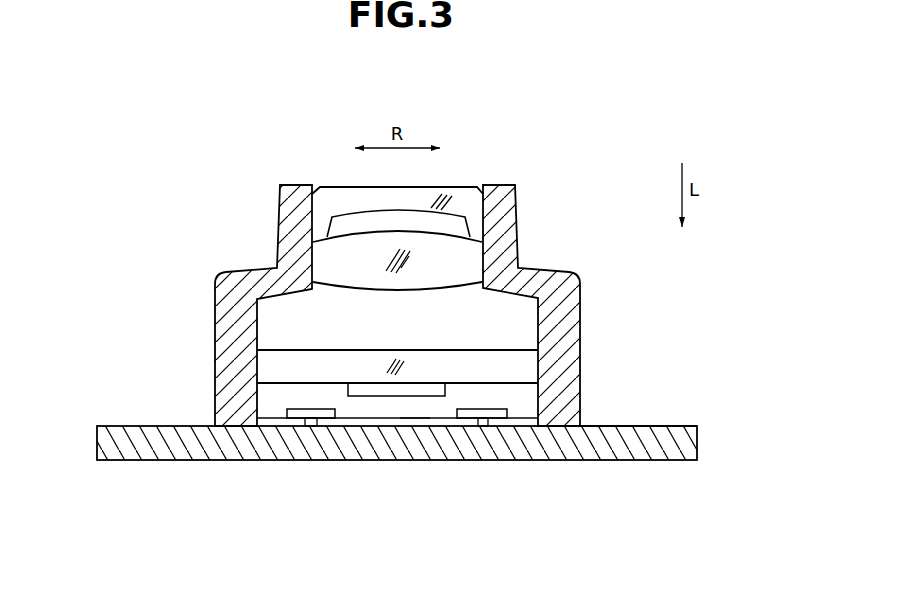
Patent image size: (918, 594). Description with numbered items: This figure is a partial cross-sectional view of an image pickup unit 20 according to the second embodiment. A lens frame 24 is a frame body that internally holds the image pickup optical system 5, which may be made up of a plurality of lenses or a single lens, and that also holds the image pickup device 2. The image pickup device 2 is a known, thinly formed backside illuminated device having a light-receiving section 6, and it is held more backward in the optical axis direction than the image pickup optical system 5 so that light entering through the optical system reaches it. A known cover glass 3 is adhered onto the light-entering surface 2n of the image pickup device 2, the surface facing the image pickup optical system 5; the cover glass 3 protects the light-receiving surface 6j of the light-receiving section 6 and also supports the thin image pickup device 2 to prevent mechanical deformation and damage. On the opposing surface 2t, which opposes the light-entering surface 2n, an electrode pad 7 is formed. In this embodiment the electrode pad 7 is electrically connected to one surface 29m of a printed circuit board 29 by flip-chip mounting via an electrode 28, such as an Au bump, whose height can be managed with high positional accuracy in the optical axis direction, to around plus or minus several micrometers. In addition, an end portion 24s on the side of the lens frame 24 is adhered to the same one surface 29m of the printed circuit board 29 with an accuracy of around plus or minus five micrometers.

The image pickup unit 20 is at (600, 156).
The lens frame 24 is at (500, 205).
The end portion 24s is at (236, 428).
The image pickup optical system 5 is at (457, 257).
The cover glass 3 is at (275, 372).
The image pickup device 2 is at (275, 402).
The light-entering surface 2n is at (307, 378).
The light-receiving surface 6j is at (359, 378).
The opposing surface 2t is at (411, 424).
The light-receiving section 6 is at (383, 392).
The electrode pad 7 is at (285, 412).
The electrode 28 is at (306, 428).
The printed circuit board 29 is at (560, 455).
The one surface 29m is at (653, 424).